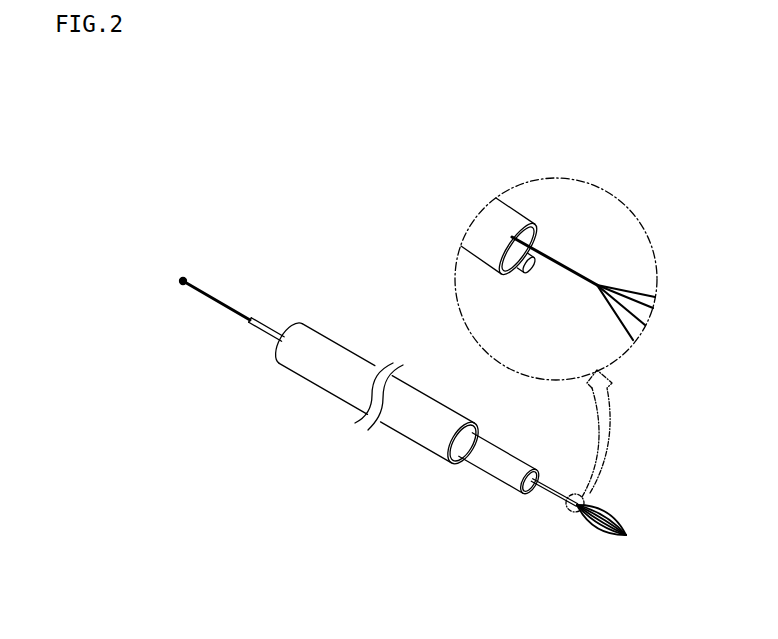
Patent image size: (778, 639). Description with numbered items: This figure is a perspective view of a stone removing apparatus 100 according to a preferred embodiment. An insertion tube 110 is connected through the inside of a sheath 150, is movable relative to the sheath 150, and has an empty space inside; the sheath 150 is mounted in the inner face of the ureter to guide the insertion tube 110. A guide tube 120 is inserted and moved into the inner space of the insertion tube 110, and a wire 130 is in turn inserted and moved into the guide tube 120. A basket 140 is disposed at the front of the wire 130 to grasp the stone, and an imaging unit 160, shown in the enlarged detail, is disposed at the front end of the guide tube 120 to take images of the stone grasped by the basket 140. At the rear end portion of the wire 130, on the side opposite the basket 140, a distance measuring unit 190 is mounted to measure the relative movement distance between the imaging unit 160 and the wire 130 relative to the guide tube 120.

The stone removing apparatus 100 is at (367, 137).
The insertion tube 110 is at (488, 467).
The guide tube 120 is at (545, 497).
The wire 130 is at (218, 303).
The basket 140 is at (605, 542).
The sheath 150 is at (312, 370).
The imaging unit 160 is at (514, 258).
The distance measuring unit 190 is at (177, 276).